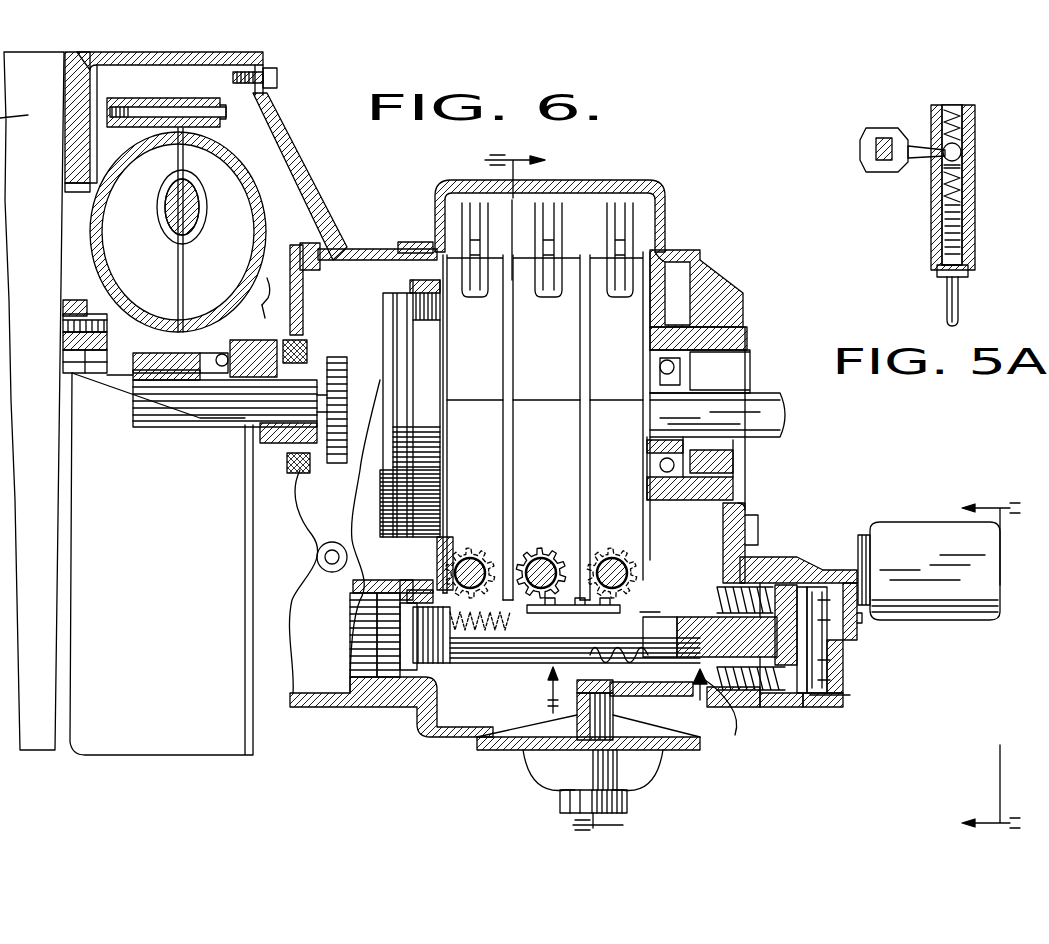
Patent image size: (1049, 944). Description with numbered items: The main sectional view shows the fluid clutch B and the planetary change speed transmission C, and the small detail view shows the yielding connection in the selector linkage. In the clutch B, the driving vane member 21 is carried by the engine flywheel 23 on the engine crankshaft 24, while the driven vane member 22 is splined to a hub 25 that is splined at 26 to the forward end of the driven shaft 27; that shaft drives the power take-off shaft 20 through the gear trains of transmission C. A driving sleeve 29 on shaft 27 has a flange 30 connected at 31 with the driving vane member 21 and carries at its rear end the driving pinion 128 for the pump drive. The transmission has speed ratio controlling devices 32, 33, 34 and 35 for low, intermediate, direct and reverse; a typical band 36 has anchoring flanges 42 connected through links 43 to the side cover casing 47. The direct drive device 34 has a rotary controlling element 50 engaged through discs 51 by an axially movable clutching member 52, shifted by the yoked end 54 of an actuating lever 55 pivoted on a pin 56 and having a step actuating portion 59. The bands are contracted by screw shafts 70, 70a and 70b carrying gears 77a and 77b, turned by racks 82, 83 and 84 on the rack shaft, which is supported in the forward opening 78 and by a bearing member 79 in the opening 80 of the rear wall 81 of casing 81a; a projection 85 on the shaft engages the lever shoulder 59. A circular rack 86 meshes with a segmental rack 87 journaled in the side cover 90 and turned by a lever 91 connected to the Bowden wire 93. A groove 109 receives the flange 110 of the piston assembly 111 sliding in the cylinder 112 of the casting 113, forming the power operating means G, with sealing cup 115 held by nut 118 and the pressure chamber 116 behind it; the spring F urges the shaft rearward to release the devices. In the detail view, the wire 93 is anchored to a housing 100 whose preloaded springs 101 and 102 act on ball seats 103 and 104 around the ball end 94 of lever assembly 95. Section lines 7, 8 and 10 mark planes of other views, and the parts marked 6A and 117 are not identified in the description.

In FIG. 6, the engine flywheel 23 is at (124, 100).
In FIG. 6, the clutch B is at (248, 135).
In FIG. 6, the driving vane member 21 is at (250, 226).
In FIG. 6, the hub or flange 30 is at (275, 281).
In FIG. 6, the connection 31 is at (276, 297).
In FIG. 6, the engine crankshaft 24 is at (80, 345).
In FIG. 6, the driven vane member 22 is at (152, 352).
In FIG. 6, the hub 25 is at (140, 382).
In FIG. 6, the spline 26 is at (162, 394).
In FIG. 6, the driven shaft 27 is at (196, 412).
In FIG. 6, the driving pinion 128 is at (225, 406).
In FIG. 6, the driving sleeve 29 is at (292, 455).
In FIG. 6, the actuating lever 55 is at (318, 518).
In FIG. 6, the pin 56 is at (325, 557).
In FIG. 6, the rotary controlling element 50 is at (426, 280).
In FIG. 6, the discs 51 is at (410, 280).
In FIG. 6, the third speed clutching controlling device 34 is at (388, 312).
In FIG. 6, the axially movable clutching member 52 is at (400, 326).
In FIG. 6, the yoked end 54 is at (372, 400).
In FIG. 6, the second speed ratio braking device 33 is at (492, 285).
In FIG. 6, the low speed braking device 32 is at (565, 285).
In FIG. 6, the anchoring flanges 42 is at (550, 296).
In FIG. 6, the links 43 is at (560, 194).
In FIG. 6, the transmission side cover casing 47 is at (618, 186).
In FIG. 6, the transmission C is at (660, 218).
In FIG. 6, the reverse drive braking device 35 is at (636, 276).
In FIG. 6, the transmission casing 81a is at (716, 284).
In FIG. 6, the outer band 36 is at (596, 352).
In FIG. 6, the power take-off shaft 20 is at (768, 414).
In FIG. 6, the rear end wall 81 is at (740, 520).
In FIG. 6, the casting 113 is at (775, 548).
In FIG. 6, the groove 109 is at (814, 586).
In FIG. 6, the fluid pressure operating piston assembly 111 is at (808, 588).
In FIG. 6, the prime mover means F is at (762, 590).
In FIG. 6, the bearing member 79 is at (720, 592).
In FIG. 6, the circular rack 86 is at (716, 622).
In FIG. 6, the power operating means G is at (845, 622).
In FIG. 6, the fastener or nut 118 is at (835, 640).
In FIG. 6, the ring 117 is at (832, 655).
In FIG. 6, the pressure chamber 116 is at (830, 668).
In FIG. 6, the cylinder 112 is at (832, 684).
In FIG. 6, the flexible sealing cup 115 is at (812, 698).
In FIG. 6, the flange 110 is at (776, 690).
In FIG. 6, the opening 80 is at (728, 706).
In FIG. 6, the segmental rack 87 is at (620, 700).
In FIG. 6, the transmission side cover 90 is at (676, 752).
In FIG. 6, the lever 91 is at (562, 810).
In FIG. 6, the section line 10 is at (607, 702).
In FIG. 6, the section line 7 is at (554, 491).
In FIG. 6, the section line 8 is at (977, 669).
In FIG. 6, the operating shaft or screw 70b is at (470, 550).
In FIG. 6, the gear 6A is at (545, 502).
In FIG. 6, the operating oscillatory shaft or screw 70 is at (600, 552).
In FIG. 6, the operating shaft or screw 70a is at (640, 570).
In FIG. 6, the gear 77b is at (437, 577).
In FIG. 6, the gear 77a is at (602, 627).
In FIG. 6, the rack 84 is at (575, 642).
In FIG. 6, the rack 82 is at (524, 626).
In FIG. 6, the rack 83 is at (619, 647).
In FIG. 6, the step actuating portion 59 is at (350, 620).
In FIG. 6, the third speed actuating projection 85 is at (350, 652).
In FIG. 6, the forward opening 78 is at (377, 672).
In FIG. 5A, the spring 101 is at (935, 125).
In FIG. 5A, the ball seat 103 is at (962, 146).
In FIG. 5A, the ball end 94 is at (962, 158).
In FIG. 5A, the ball seat 104 is at (962, 170).
In FIG. 5A, the spring 102 is at (962, 190).
In FIG. 5A, the housing 100 is at (970, 238).
In FIG. 5A, the Bowden wire operating mechanism 93 is at (962, 306).
In FIG. 5A, the lever assembly 95 is at (880, 172).